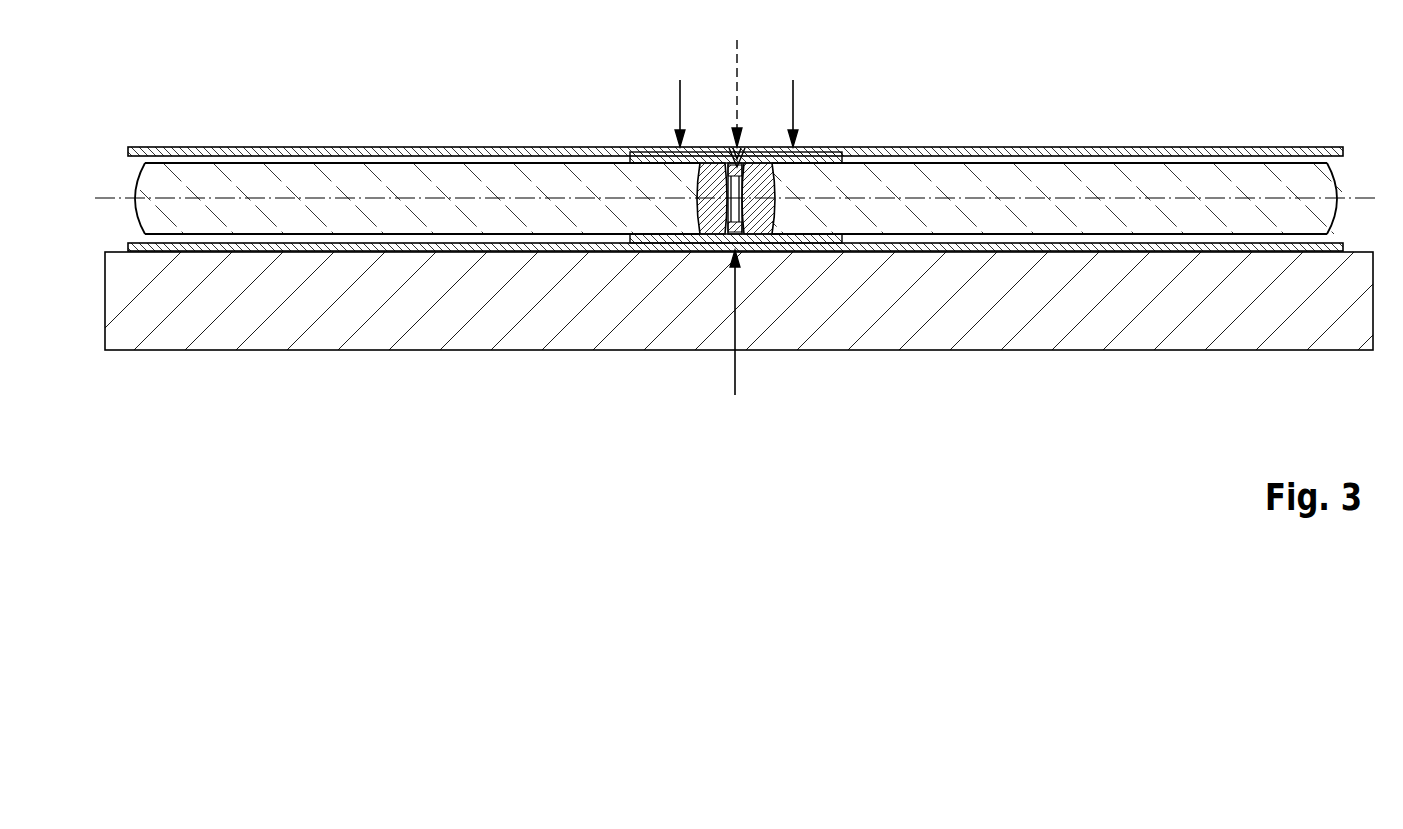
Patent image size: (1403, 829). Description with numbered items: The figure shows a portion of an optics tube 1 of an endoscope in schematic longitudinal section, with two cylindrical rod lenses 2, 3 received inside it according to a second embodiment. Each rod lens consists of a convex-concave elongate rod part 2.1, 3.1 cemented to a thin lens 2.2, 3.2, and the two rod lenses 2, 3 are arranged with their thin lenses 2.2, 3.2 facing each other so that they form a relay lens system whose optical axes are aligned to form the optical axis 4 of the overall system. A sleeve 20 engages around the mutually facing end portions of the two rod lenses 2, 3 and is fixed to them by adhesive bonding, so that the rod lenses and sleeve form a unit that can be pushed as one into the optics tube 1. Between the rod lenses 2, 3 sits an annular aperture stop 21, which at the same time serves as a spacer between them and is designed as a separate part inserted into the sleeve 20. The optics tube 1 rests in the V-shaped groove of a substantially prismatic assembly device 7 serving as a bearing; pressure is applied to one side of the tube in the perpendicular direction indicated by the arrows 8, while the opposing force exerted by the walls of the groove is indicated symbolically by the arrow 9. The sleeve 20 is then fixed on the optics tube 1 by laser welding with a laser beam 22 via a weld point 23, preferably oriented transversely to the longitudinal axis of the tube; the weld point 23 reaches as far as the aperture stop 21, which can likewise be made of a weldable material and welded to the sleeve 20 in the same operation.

The optics tube 1 is at (167, 146).
The rod lens 2 is at (431, 239).
The rod part 2.1 is at (577, 225).
The thin lens 2.2 is at (716, 225).
The rod lens 3 is at (1039, 239).
The rod part 3.1 is at (885, 225).
The thin lens 3.2 is at (760, 225).
The optical axis 4 is at (108, 197).
The assembly device 7 is at (610, 337).
The arrows 8 is at (680, 90).
The arrows 9 is at (735, 382).
The sleeve 20 is at (648, 158).
The annular aperture stop 21 is at (733, 228).
The laser beam 22 is at (739, 47).
The weld point 23 is at (740, 150).